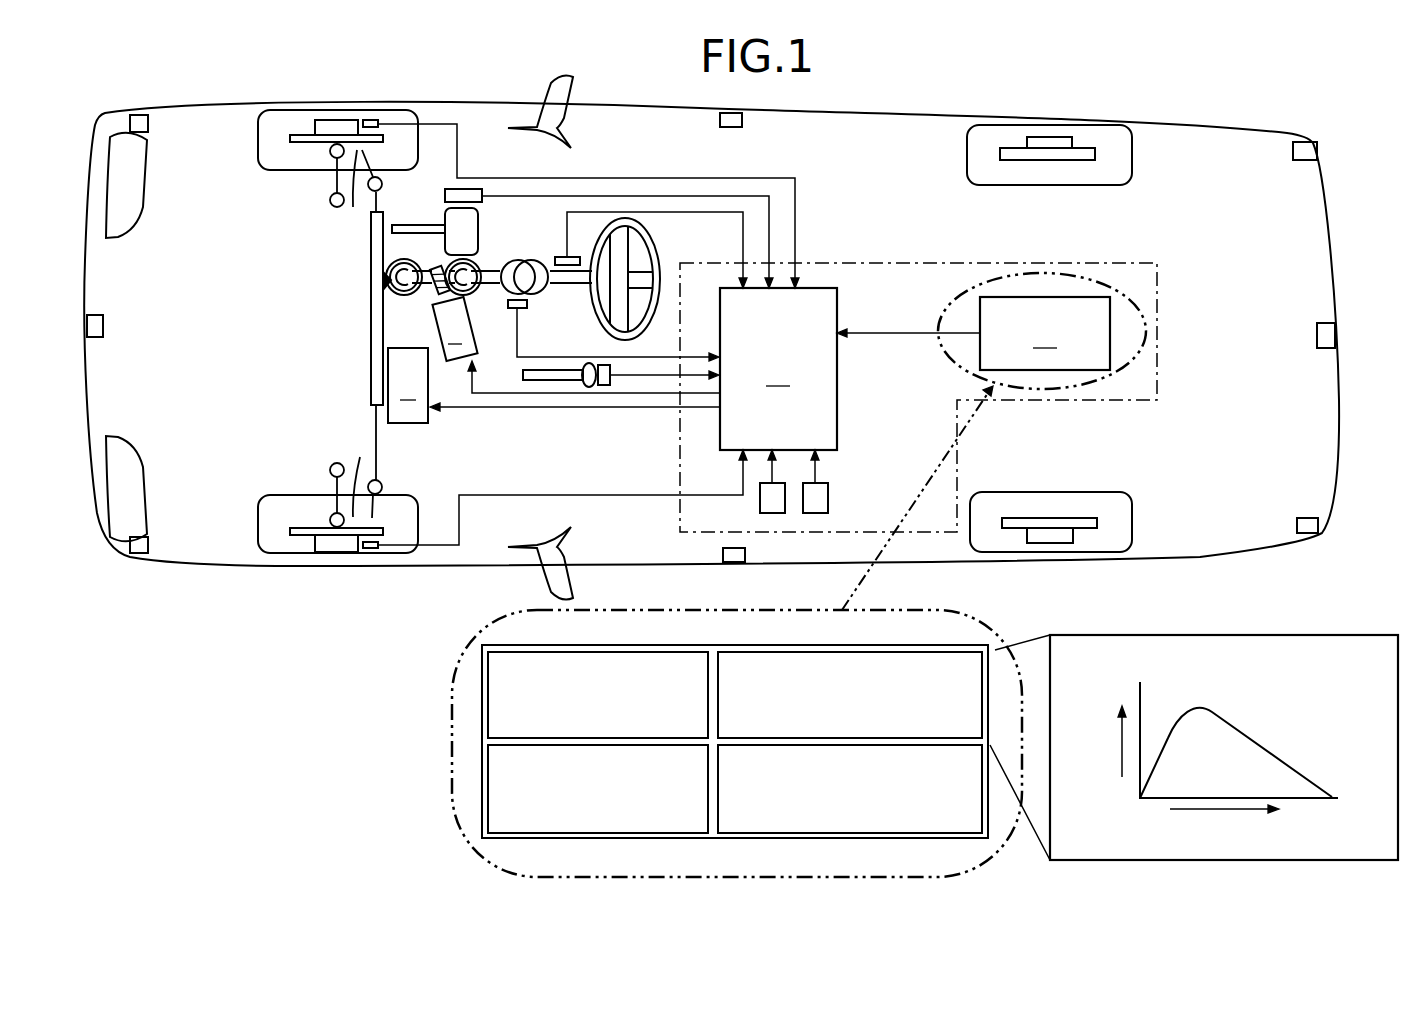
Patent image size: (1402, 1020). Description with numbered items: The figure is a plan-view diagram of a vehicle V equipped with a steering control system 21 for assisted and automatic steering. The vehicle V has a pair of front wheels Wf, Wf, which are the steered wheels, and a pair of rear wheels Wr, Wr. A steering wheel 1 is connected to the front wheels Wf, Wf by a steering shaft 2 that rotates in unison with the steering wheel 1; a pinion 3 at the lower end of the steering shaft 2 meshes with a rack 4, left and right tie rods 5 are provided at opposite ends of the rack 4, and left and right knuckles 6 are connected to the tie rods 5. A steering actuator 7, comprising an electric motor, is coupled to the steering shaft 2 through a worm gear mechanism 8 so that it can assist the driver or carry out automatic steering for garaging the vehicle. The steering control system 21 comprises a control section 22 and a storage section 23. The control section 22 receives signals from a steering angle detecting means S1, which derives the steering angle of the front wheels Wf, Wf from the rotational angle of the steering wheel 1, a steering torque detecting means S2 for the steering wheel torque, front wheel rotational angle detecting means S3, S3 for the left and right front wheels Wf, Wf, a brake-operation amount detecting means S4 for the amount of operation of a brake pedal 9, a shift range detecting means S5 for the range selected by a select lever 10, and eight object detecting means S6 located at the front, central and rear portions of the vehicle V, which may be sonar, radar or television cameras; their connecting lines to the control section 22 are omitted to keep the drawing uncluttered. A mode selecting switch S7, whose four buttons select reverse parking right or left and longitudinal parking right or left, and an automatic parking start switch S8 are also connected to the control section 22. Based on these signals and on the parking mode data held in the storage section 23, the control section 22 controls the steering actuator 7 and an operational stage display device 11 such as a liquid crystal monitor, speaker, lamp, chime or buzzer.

The steering wheel 1 is at (653, 252).
The steering shaft 2 is at (565, 283).
The pinion 3 is at (386, 265).
The rack 4 is at (373, 338).
The tie rods 5 is at (383, 203).
The knuckles 6 is at (348, 335).
The steering actuator 7 is at (576, 345).
The worm gear mechanism 8 is at (430, 297).
The brake pedal 9 is at (470, 233).
The select lever 10 is at (588, 364).
The operational stage display device 11 is at (554, 385).
The steering control system 21 is at (1157, 307).
The control section 22 is at (778, 369).
The storage section 23 is at (925, 575).
The steering angle detecting means S1 is at (558, 257).
The steering torque detecting means S2 is at (514, 308).
The front wheel rotational angle detecting means S3 is at (374, 121).
The brake-operation amount detecting means S4 is at (450, 190).
The shift range detecting means S5 is at (610, 367).
The object detecting means S6 is at (145, 128).
The mode selecting switch S7 is at (765, 500).
The automatic parking start switch S8 is at (813, 503).
The vehicle V is at (215, 575).
The front wheels Wf is at (267, 171).
The rear wheels Wr is at (1131, 160).